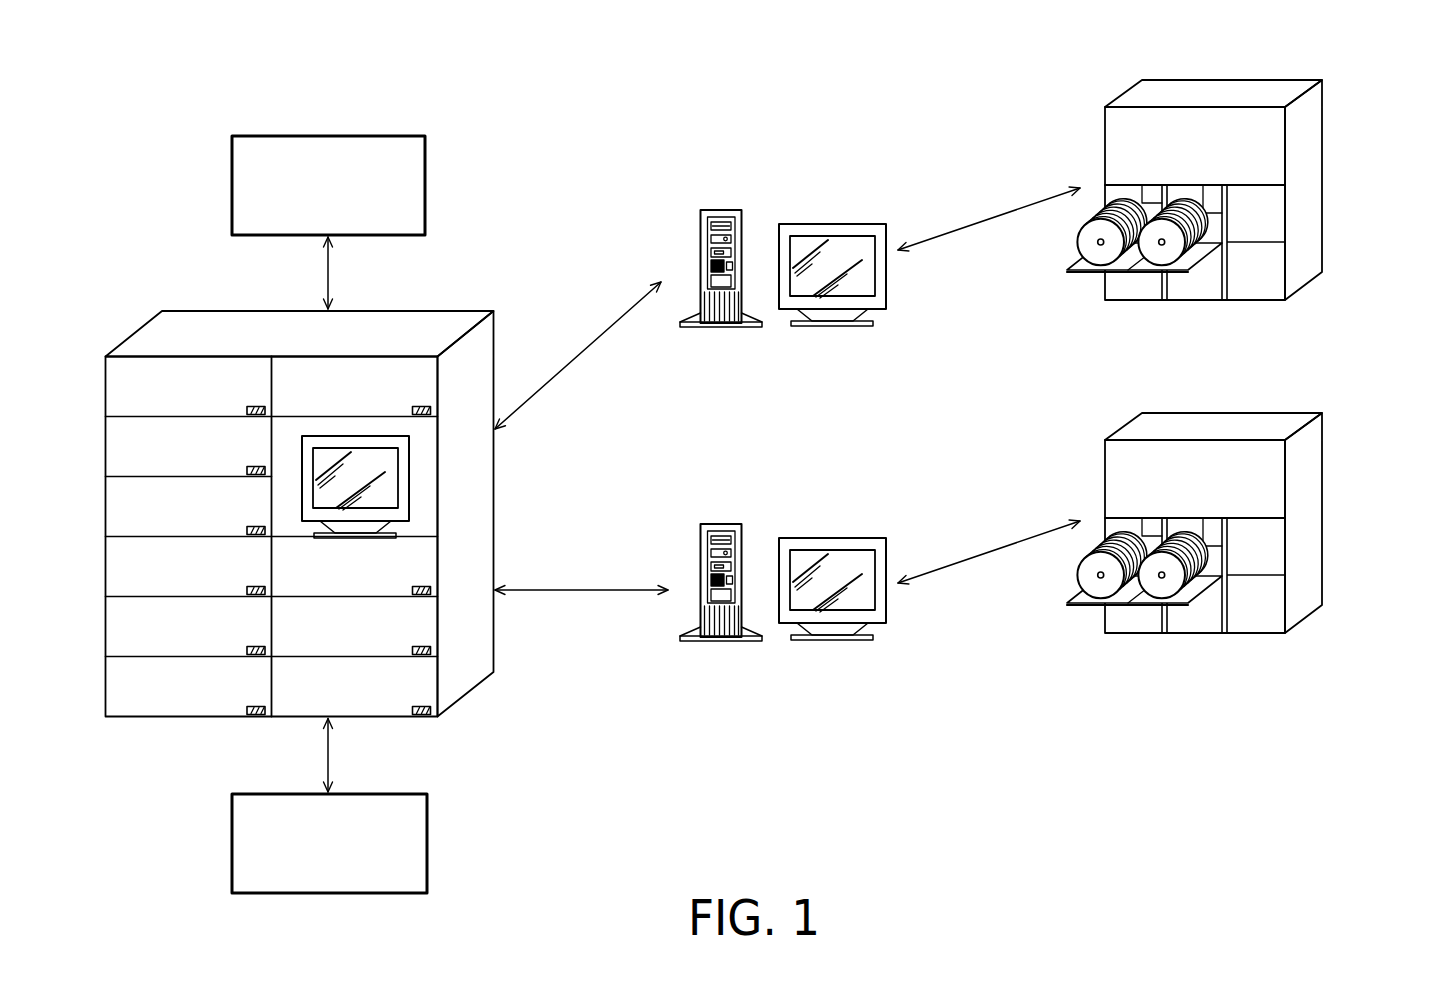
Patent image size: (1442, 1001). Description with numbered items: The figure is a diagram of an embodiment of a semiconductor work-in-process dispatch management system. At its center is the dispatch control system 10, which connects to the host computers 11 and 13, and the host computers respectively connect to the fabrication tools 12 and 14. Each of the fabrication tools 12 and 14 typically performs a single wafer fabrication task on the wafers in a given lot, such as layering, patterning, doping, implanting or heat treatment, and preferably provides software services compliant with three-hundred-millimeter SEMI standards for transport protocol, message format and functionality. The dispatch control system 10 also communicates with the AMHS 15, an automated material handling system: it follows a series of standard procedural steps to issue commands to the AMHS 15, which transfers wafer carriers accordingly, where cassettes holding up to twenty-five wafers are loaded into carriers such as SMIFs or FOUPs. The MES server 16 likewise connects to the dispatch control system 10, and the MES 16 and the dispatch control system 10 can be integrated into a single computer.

The dispatch control system 10 is at (187, 311).
The host computer 11 is at (722, 210).
The fabrication tool 12 is at (1322, 173).
The host computer 13 is at (722, 524).
The fabrication tool 14 is at (1322, 506).
The AMHS (automated material handling system) 15 is at (330, 136).
The MES (Manufacturing Execution System) server 16 is at (427, 843).